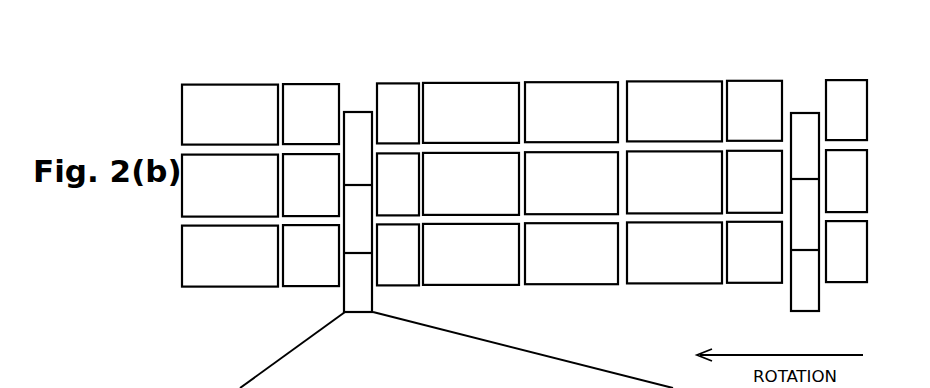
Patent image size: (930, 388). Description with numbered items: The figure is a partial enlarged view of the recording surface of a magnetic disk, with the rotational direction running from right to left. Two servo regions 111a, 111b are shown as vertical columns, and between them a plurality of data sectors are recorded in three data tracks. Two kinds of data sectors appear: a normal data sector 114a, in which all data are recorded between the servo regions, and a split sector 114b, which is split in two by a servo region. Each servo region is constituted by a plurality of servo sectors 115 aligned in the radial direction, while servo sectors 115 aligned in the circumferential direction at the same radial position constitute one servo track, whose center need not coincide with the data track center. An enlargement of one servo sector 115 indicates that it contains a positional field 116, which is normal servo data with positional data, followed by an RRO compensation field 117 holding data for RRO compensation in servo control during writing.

The servo region 111a is at (358, 92).
The servo region 111b is at (767, 294).
The normal data sector 114a is at (472, 83).
The split sector 114b is at (847, 80).
The servo sector 115 is at (345, 292).
The positional field 116 is at (348, 384).
The RRO compensation field 117 is at (580, 384).